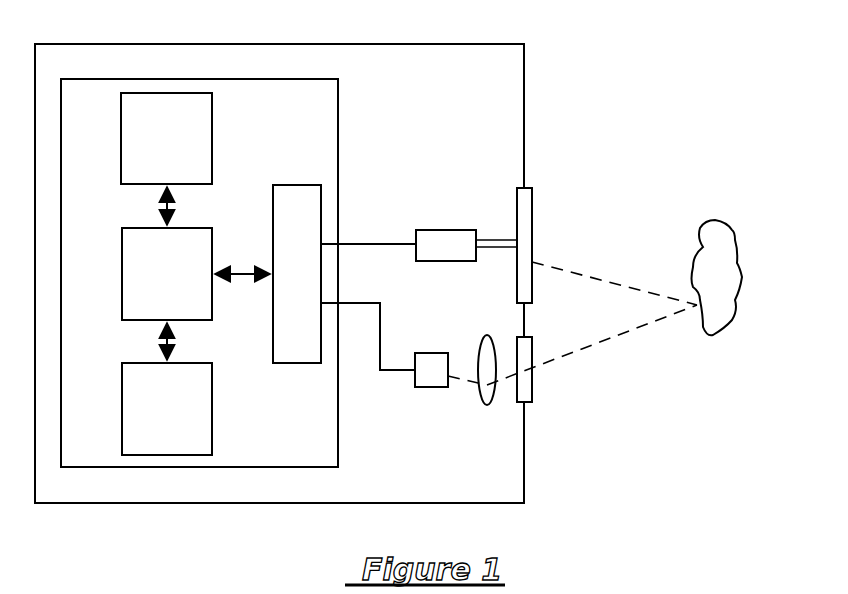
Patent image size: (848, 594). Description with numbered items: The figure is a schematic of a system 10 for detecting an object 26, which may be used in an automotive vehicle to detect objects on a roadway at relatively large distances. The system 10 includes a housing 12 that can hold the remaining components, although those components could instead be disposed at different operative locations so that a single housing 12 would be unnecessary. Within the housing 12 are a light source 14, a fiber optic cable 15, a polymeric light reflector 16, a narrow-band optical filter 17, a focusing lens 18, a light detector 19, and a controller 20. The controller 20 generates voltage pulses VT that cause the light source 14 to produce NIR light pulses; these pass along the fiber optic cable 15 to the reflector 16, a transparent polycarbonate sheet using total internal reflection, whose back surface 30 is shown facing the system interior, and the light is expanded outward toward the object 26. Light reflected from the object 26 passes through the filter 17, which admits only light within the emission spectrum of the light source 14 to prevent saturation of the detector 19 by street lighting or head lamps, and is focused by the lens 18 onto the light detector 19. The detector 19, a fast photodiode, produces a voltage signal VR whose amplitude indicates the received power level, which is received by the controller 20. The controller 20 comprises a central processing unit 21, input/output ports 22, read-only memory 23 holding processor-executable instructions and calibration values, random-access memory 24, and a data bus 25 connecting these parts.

The system 10 is at (601, 68).
The housing 12 is at (440, 44).
The light source 14 is at (442, 229).
The fiber optic cable 15 is at (494, 239).
The polymeric light reflector 16 is at (530, 216).
The narrow-band optical filter 17 is at (532, 348).
The focusing lens 18 is at (488, 335).
The light detector 19 is at (432, 342).
The controller 20 is at (338, 107).
The central processing unit 21 is at (196, 228).
The input/output ports 22 is at (297, 185).
The read-only memory 23 is at (212, 136).
The random-access memory 24 is at (212, 406).
The data bus 25 is at (243, 271).
The object 26 is at (733, 232).
The back surface 30 is at (517, 262).
The voltage pulses VT is at (363, 243).
The voltage signal VR is at (355, 303).